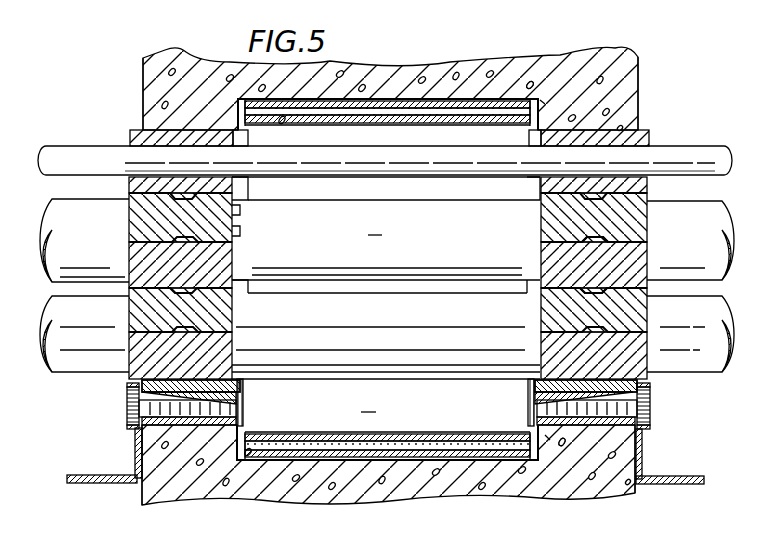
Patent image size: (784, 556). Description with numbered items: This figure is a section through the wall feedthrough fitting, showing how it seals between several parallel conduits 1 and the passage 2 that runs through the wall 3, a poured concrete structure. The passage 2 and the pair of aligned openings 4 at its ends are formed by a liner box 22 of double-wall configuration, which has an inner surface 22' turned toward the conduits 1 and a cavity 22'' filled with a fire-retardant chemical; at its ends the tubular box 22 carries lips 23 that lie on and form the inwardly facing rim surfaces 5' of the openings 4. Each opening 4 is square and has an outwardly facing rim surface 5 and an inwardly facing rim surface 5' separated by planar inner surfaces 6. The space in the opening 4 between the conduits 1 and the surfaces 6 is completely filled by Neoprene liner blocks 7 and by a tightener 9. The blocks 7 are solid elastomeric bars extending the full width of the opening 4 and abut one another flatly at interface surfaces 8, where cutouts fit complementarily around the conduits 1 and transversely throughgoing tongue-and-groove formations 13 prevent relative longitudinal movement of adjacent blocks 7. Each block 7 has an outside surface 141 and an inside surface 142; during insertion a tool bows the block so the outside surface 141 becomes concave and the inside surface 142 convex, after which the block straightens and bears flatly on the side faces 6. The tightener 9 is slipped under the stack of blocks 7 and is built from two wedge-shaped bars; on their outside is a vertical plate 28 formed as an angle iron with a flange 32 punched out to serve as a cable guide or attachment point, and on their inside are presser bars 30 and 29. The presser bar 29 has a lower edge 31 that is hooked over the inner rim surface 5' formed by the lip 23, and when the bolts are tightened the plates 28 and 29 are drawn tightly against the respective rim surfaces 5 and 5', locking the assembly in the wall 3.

The conduit 1 is at (670, 152).
The passage 2 is at (420, 180).
The wall 3 is at (388, 76).
The opening 4 is at (163, 68).
The outwardly facing rim surface 5 is at (368, 418).
The inwardly facing rim surface 5' is at (385, 405).
The planar inner surface 6 is at (174, 135).
The liner block 7 is at (640, 210).
The interface surface 8 is at (627, 299).
The tightener 9 is at (123, 414).
The tongue-and-groove formation 13 is at (244, 208).
The liner box 22 is at (387, 284).
The inner surface of liner box 22' is at (387, 124).
The cavity of liner box 22'' is at (387, 426).
The lip 23 is at (534, 110).
The vertical plate 28 is at (650, 444).
The presser bar 29 is at (250, 407).
The presser bar 30 is at (242, 381).
The lower edge 31 is at (536, 422).
The flange 32 is at (112, 484).
The outside surface of liner block 141 is at (656, 266).
The inside surface of liner block 142 is at (540, 245).